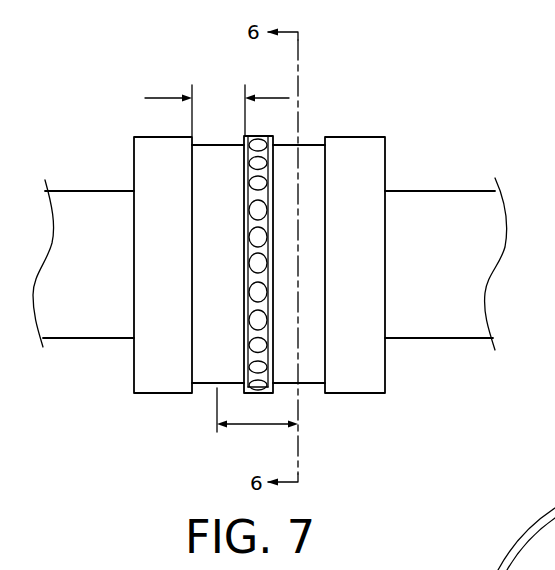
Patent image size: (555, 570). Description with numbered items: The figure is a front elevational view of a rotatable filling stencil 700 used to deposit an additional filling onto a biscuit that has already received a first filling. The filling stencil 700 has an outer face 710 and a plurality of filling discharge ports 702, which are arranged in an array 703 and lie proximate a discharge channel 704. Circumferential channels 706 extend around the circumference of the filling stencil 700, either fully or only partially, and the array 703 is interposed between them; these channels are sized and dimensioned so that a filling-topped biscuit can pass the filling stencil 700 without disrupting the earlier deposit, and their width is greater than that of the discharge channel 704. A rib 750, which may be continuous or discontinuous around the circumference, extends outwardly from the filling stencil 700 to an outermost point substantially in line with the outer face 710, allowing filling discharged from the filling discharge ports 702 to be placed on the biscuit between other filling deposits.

The rotatable filling stencil 700 is at (449, 436).
The filling discharge ports 702 is at (258, 208).
The array 703 is at (258, 394).
The discharge channel 704 is at (245, 305).
The circumferential channels 706 is at (224, 158).
The outer face 710 is at (162, 152).
The rib 750 is at (245, 355).